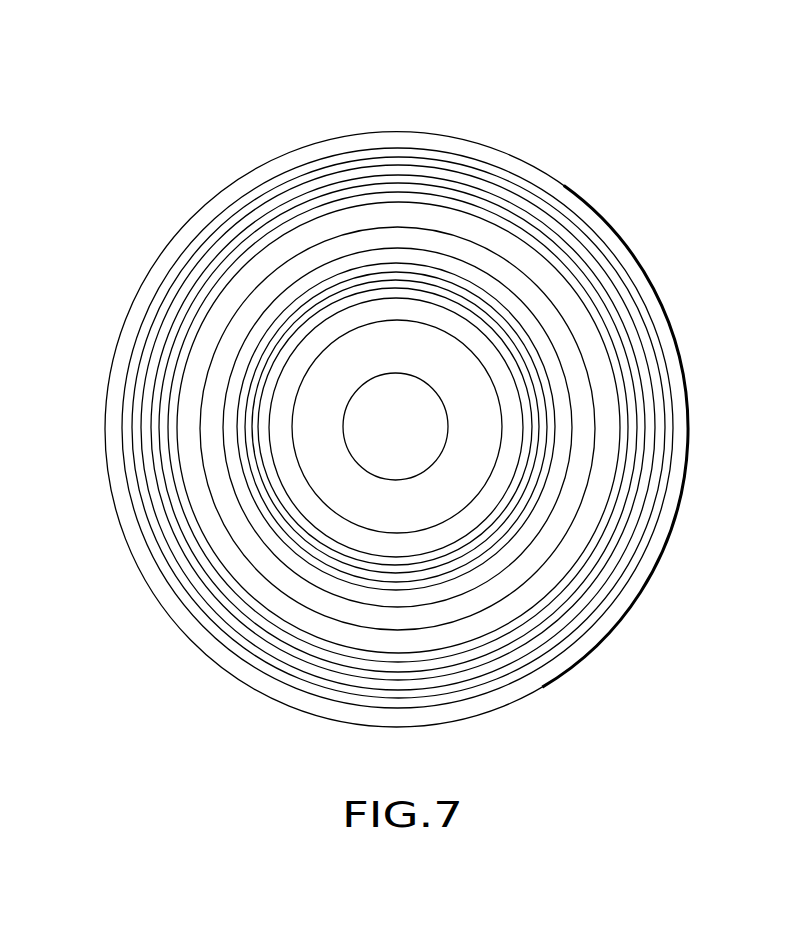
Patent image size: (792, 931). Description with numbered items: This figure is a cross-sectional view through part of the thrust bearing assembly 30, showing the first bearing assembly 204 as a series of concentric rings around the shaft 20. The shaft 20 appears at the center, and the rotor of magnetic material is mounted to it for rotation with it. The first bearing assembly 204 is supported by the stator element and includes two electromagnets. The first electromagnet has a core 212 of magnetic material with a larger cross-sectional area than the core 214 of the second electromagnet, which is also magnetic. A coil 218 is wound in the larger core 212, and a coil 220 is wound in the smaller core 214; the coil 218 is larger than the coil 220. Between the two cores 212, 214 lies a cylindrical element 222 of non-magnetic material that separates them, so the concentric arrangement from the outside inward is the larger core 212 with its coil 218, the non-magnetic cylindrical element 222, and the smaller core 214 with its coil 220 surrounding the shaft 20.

The first bearing assembly 204 is at (212, 132).
The thrust bearing assembly 30 is at (530, 72).
The core 212 is at (548, 170).
The coil 218 is at (394, 167).
The cylindrical element 222 is at (570, 360).
The core 214 is at (555, 477).
The coil 220 is at (517, 522).
The shaft 20 is at (357, 452).